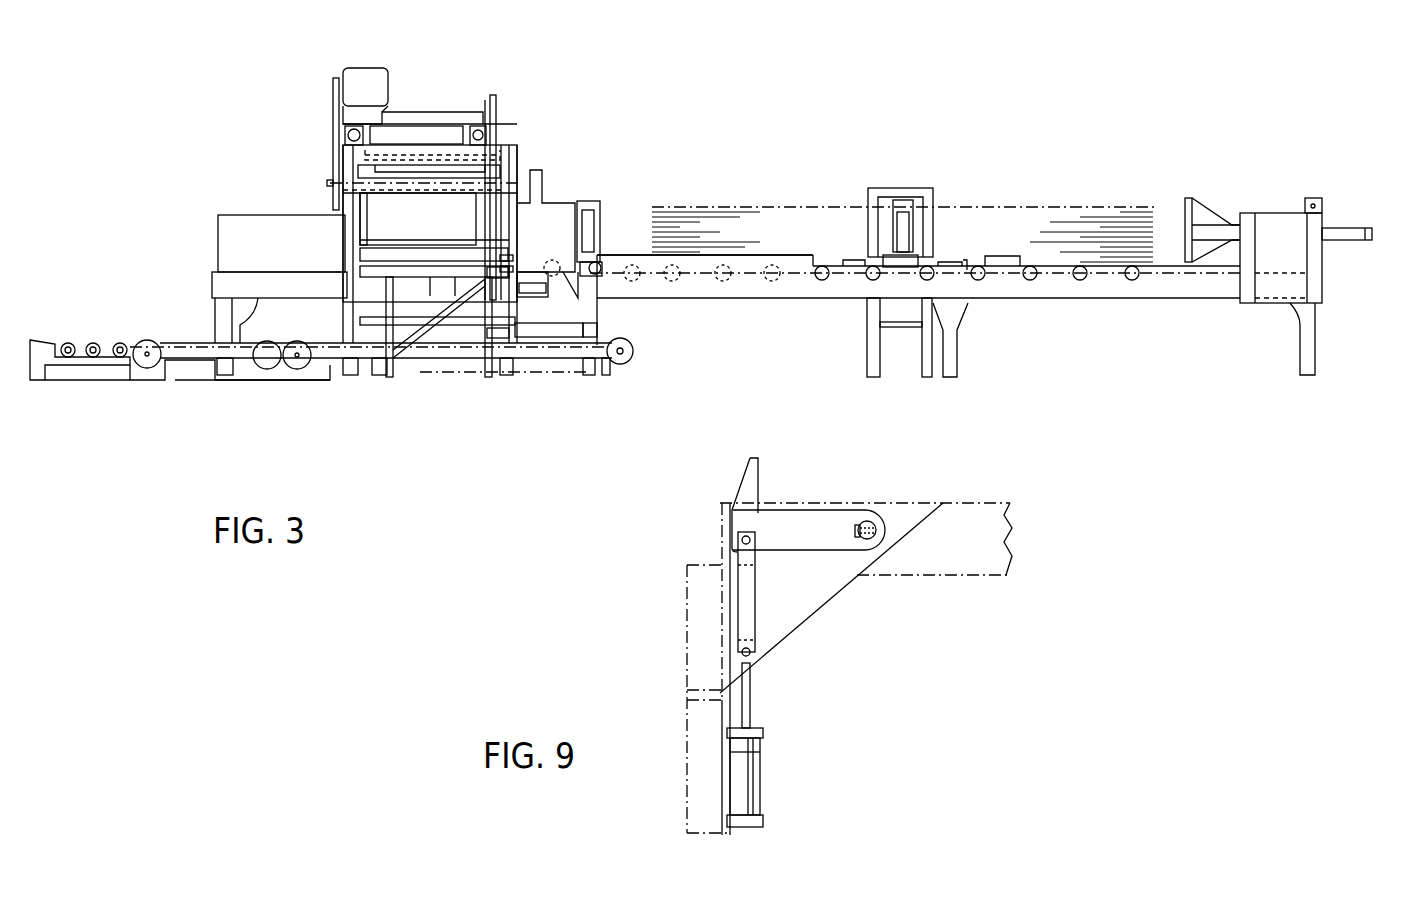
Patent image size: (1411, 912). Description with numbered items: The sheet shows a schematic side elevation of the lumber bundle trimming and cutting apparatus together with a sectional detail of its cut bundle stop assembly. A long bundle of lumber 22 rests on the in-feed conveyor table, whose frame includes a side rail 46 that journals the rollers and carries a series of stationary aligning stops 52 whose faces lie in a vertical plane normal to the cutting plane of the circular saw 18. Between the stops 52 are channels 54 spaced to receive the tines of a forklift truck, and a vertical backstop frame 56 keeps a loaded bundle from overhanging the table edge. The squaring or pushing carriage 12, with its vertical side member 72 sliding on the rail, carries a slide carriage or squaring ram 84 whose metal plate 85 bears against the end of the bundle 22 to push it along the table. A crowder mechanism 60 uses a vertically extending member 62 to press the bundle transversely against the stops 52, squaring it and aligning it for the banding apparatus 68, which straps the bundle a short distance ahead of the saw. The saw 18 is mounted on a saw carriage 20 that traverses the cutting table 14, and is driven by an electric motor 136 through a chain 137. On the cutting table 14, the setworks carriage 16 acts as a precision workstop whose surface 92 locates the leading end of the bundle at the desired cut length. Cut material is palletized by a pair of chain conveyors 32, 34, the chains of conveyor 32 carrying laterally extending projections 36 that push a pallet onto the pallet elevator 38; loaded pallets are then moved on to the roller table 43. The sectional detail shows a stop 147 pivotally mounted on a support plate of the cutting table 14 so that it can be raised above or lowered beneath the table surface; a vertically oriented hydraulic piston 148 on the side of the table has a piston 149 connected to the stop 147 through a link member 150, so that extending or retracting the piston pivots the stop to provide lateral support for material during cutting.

In FIG. 3, the squaring or pushing carriage 12 is at (1290, 266).
In FIG. 3, the cutting table 14 is at (420, 301).
In FIG. 9, the cutting table 14 is at (944, 503).
In FIG. 3, the setworks carriage 16 is at (292, 259).
In FIG. 3, the circular saw 18 is at (499, 116).
In FIG. 3, the saw carriage 20 is at (443, 110).
In FIG. 3, the bundle of lumber 22 is at (1003, 213).
In FIG. 3, the chain conveyor 32 is at (566, 372).
In FIG. 3, the chain conveyor 34 is at (205, 368).
In FIG. 3, the laterally extending projections 36 is at (313, 344).
In FIG. 3, the pallet elevator 38 is at (494, 338).
In FIG. 3, the roller table 43 is at (78, 365).
In FIG. 3, the side rail 46 is at (1155, 287).
In FIG. 3, the aligning stops 52 is at (800, 258).
In FIG. 3, the channels 54 is at (845, 270).
In FIG. 3, the backstop frame 56 is at (920, 190).
In FIG. 3, the crowder mechanism 60 is at (590, 197).
In FIG. 3, the vertically extending member 62 is at (598, 240).
In FIG. 3, the banding apparatus 68 is at (556, 244).
In FIG. 3, the vertical side member 72 is at (1263, 215).
In FIG. 3, the slide carriage or squaring ram 84 is at (1338, 230).
In FIG. 3, the metal plate 85 is at (1185, 202).
In FIG. 3, the surface of the setworks carriage 92 is at (368, 230).
In FIG. 3, the electric motor 136 is at (367, 80).
In FIG. 3, the chain 137 is at (331, 156).
In FIG. 9, the stop 147 is at (760, 480).
In FIG. 9, the hydraulic piston 148 is at (745, 785).
In FIG. 9, the piston 149 is at (750, 700).
In FIG. 9, the link member 150 is at (745, 600).